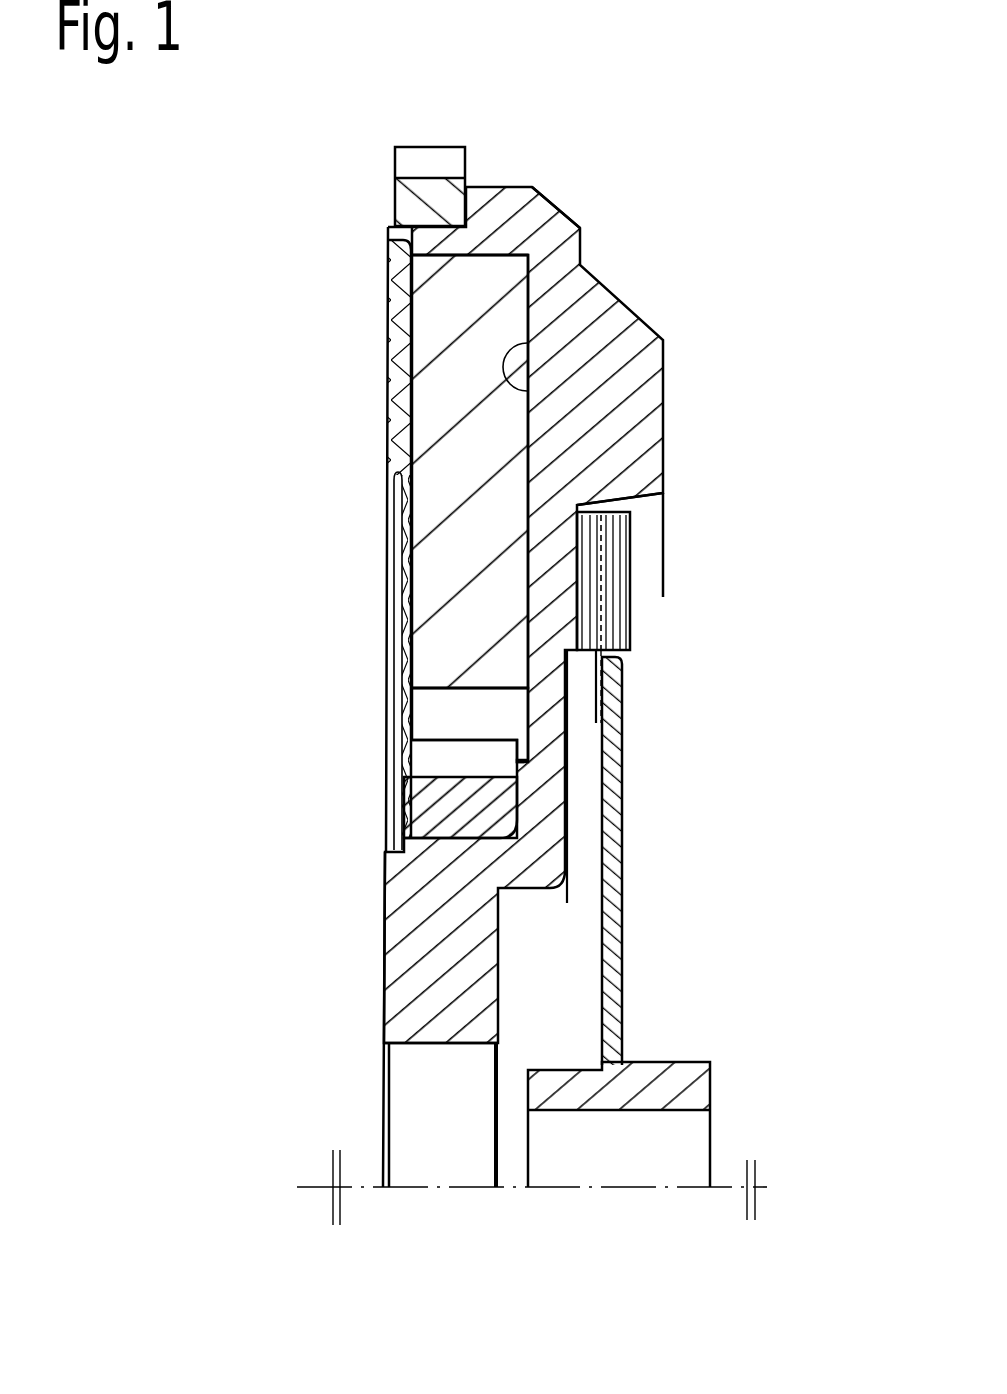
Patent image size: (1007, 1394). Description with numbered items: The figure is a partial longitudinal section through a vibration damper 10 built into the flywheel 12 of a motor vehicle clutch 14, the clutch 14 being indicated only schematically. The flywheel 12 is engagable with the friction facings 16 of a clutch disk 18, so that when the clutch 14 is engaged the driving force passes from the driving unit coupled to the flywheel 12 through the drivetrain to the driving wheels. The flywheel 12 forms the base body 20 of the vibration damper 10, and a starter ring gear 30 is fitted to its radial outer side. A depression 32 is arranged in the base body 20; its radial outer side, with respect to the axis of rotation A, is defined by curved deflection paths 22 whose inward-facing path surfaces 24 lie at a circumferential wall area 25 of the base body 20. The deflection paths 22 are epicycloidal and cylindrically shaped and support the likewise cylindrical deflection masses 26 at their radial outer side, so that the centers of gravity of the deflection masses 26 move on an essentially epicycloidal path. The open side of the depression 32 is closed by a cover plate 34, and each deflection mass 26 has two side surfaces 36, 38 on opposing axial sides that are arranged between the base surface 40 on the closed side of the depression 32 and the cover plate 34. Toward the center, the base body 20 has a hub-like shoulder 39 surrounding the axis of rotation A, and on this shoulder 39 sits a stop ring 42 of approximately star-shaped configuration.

The vibration damper 10 is at (616, 112).
The flywheel 12 is at (633, 310).
The clutch 14 is at (748, 556).
The friction facings 16 is at (630, 632).
The clutch disk 18 is at (722, 910).
The base body 20 is at (383, 878).
The deflection path 22 is at (428, 265).
The path surface 24 is at (477, 257).
The circumferential wall area 25 is at (547, 227).
The deflection mass 26 is at (447, 372).
The starter ring gear 30 is at (395, 193).
The depression 32 is at (442, 705).
The cover plate 34 is at (390, 530).
The side surface 36 is at (407, 453).
The side surface 38 is at (535, 460).
The hub-like shoulder 39 is at (402, 935).
The base surface 40 is at (535, 392).
The stop ring 42 is at (420, 800).
The axis of rotation A is at (457, 1187).